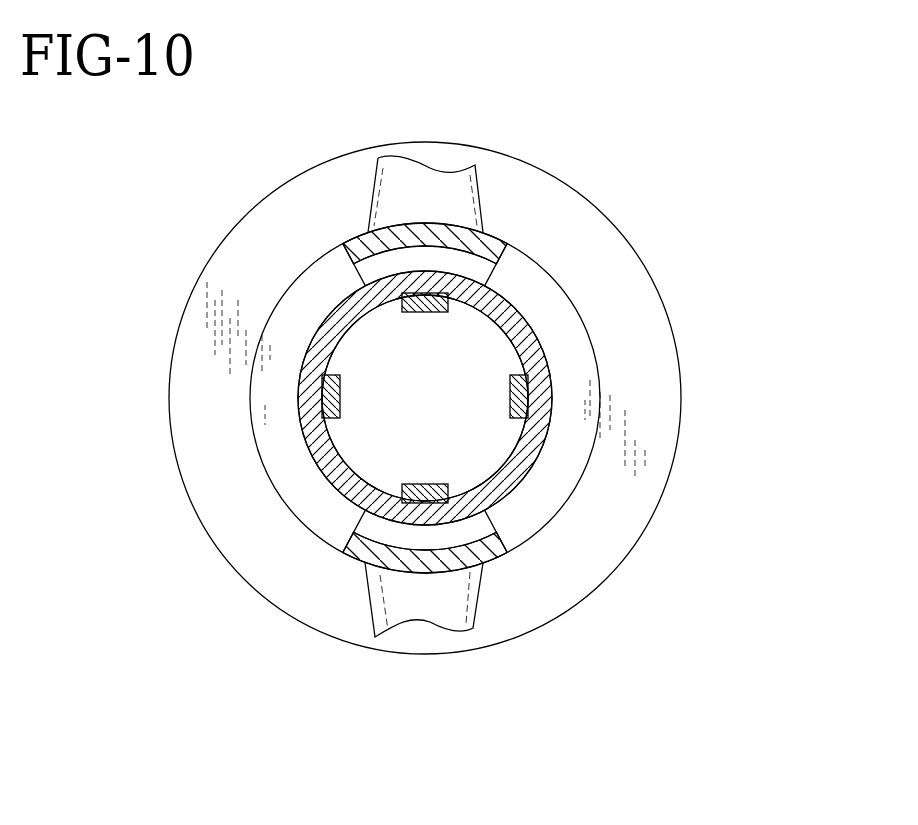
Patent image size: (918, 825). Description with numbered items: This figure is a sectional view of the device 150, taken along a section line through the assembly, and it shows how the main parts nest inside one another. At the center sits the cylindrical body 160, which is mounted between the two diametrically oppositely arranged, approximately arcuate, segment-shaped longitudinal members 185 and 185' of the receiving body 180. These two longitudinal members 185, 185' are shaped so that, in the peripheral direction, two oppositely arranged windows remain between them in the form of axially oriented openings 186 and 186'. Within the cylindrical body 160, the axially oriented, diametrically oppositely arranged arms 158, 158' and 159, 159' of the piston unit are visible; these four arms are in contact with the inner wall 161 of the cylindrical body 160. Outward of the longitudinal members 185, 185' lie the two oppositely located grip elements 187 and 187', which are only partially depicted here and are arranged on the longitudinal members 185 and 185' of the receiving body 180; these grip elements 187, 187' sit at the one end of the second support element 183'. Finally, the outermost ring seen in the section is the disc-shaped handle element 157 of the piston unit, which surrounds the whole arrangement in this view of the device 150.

The device 150 is at (216, 144).
The handle element 157 is at (192, 363).
The receiving body 180 is at (249, 304).
The longitudinal member 185 is at (481, 196).
The longitudinal member 185' is at (348, 601).
The second support element 183' is at (230, 531).
The grip element 187 is at (436, 136).
The grip element 187' is at (441, 660).
The opening 186 is at (667, 365).
The opening 186' is at (156, 428).
The cylindrical body 160 is at (573, 434).
The inner wall 161 is at (498, 458).
The arm 159 is at (425, 330).
The arm 159' is at (427, 466).
The arm 158 is at (482, 396).
The arm 158' is at (368, 396).